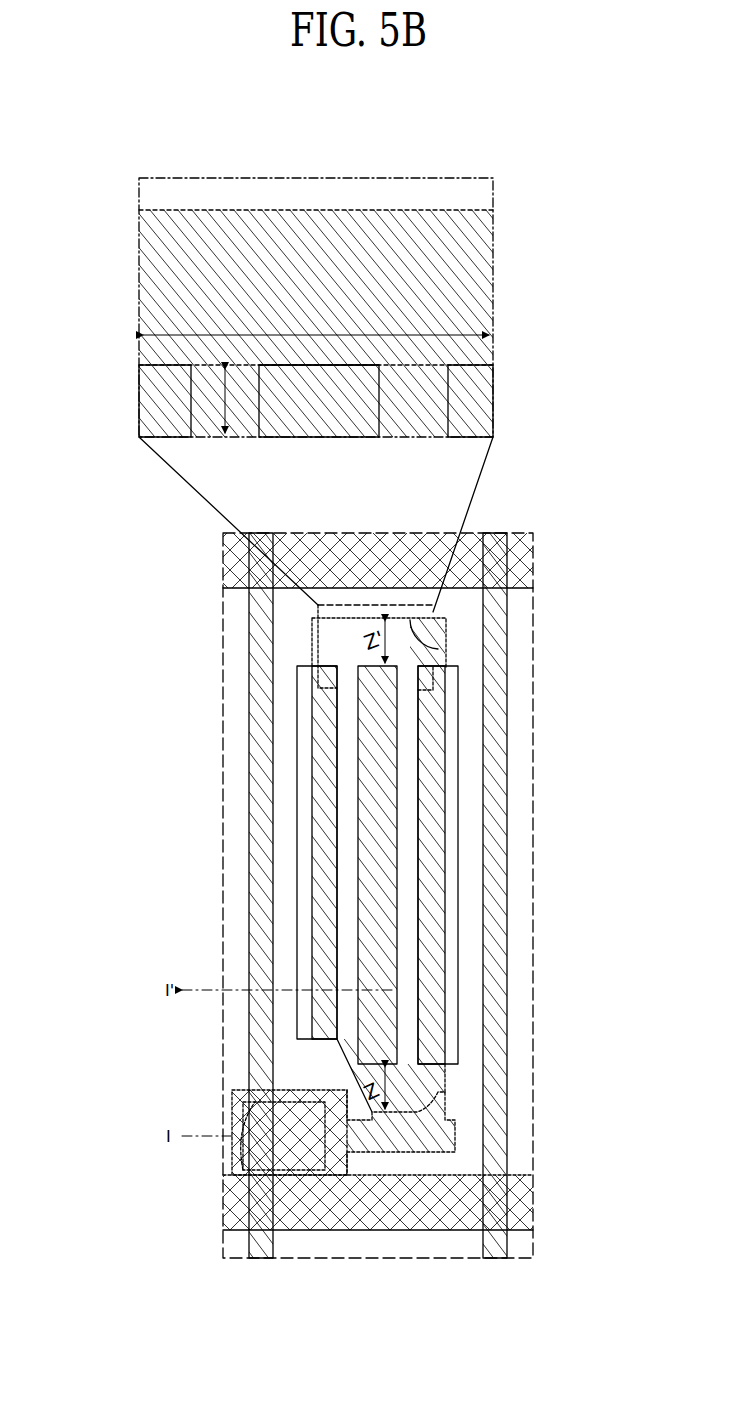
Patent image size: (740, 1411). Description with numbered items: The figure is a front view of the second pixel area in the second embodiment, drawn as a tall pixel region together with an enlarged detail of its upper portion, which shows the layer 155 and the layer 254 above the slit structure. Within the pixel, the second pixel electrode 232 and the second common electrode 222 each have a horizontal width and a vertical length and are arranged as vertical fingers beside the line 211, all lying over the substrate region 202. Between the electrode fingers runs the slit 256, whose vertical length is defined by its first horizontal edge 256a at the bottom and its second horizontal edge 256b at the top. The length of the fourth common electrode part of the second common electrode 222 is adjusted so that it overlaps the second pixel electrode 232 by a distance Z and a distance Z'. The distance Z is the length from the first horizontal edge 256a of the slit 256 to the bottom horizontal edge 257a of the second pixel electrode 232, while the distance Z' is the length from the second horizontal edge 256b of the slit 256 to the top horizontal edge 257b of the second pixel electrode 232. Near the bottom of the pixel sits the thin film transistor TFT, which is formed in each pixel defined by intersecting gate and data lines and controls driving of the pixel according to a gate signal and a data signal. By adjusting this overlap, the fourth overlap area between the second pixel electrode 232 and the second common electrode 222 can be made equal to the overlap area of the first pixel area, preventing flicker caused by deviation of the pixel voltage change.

The encapsulation layer 155 is at (331, 246).
The bank / pixel defining layer 254 is at (203, 392).
The slit 256 is at (293, 405).
The second horizontal edge 256b is at (337, 368).
The first horizontal edge 256a is at (330, 1040).
The bottom horizontal edge 257a is at (420, 1104).
The top horizontal edge 257b is at (446, 649).
The substrate 202 is at (237, 1205).
The gate line / wiring 211 is at (262, 938).
The second common electrode 222 is at (350, 870).
The second pixel electrode 232 is at (316, 830).
The thin film transistor TFT is at (290, 1175).